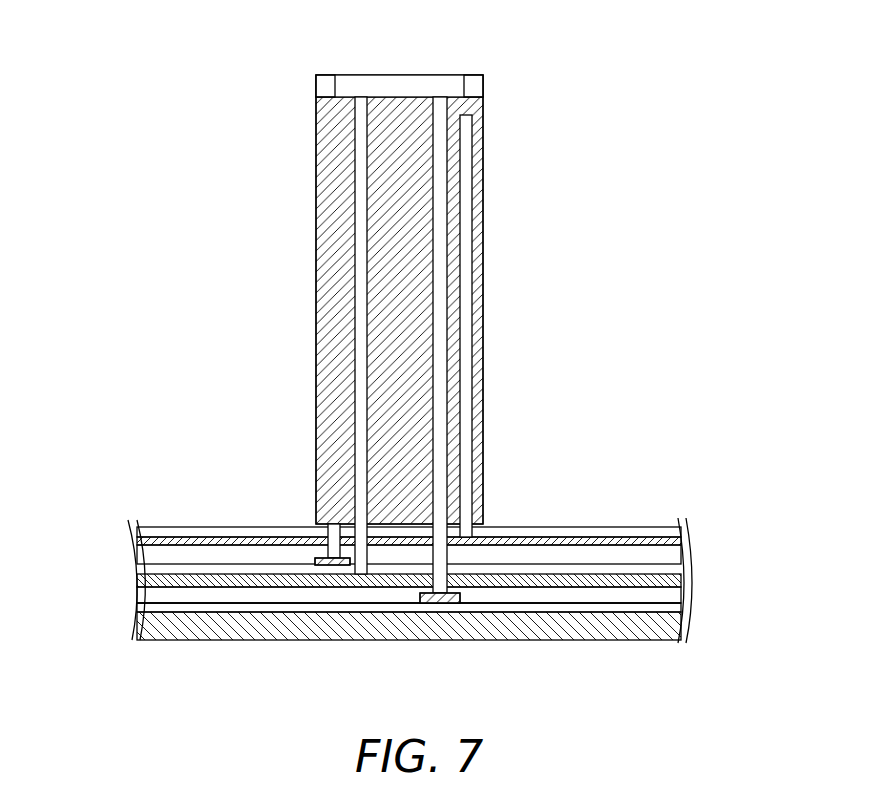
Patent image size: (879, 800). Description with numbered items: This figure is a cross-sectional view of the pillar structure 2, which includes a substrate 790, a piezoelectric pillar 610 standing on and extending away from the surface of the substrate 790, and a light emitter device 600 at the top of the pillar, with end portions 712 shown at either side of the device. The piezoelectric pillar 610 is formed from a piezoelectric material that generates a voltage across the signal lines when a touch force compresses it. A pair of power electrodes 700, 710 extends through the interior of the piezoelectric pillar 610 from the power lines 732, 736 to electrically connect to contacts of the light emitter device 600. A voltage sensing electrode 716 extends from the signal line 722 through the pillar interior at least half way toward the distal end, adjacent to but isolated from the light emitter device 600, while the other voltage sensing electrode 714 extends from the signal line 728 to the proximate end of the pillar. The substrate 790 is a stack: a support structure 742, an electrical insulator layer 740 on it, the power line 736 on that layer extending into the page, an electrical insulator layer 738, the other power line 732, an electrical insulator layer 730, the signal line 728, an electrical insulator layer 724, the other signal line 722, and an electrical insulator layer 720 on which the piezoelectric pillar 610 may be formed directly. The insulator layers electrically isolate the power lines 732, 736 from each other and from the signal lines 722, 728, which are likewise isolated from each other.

The pillar structure 2 is at (615, 78).
The light emitter device 600 is at (388, 87).
The piezoelectric pillar 610 is at (410, 181).
The power electrode 700 is at (361, 298).
The power electrode 710 is at (437, 405).
The cap end portions 712 is at (327, 85).
The voltage sensing electrode 714 is at (333, 542).
The voltage sensing electrode 716 is at (465, 377).
The electrical insulator layer 720 is at (517, 527).
The signal line 722 is at (605, 541).
The electrical insulator layer 724 is at (652, 552).
The signal line 728 is at (318, 561).
The electrical insulator layer 730 is at (668, 571).
The power line 732 is at (663, 586).
The power line 736 is at (443, 595).
The electrical insulator layer 738 is at (641, 596).
The electrical insulator layer 740 is at (622, 605).
The support structure 742 is at (600, 628).
The substrate 790 is at (415, 624).